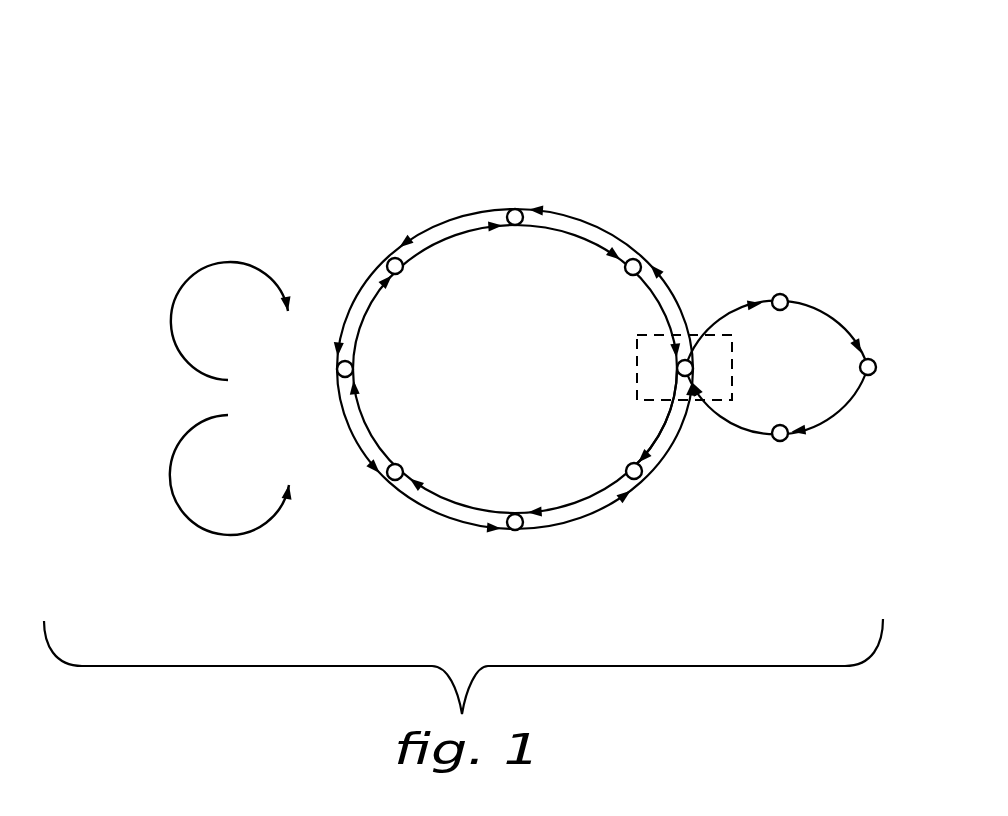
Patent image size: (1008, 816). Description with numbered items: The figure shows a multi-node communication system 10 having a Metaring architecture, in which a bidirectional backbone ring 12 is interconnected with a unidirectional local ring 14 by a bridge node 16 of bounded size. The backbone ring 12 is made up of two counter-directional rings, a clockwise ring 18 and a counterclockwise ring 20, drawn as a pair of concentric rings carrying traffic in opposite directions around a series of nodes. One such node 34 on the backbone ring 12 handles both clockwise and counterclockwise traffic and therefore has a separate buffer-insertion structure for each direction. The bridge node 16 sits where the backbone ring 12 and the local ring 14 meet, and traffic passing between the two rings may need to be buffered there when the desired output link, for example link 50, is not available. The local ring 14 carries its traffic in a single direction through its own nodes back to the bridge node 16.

The multi-node communication system 10 is at (132, 132).
The bidirectional backbone ring 12 is at (534, 302).
The unidirectional local ring 14 is at (830, 245).
The bridge node 16 is at (693, 333).
The clockwise ring 18 is at (220, 261).
The counterclockwise ring 20 is at (225, 535).
The node 34 is at (644, 475).
The link 50 is at (660, 423).